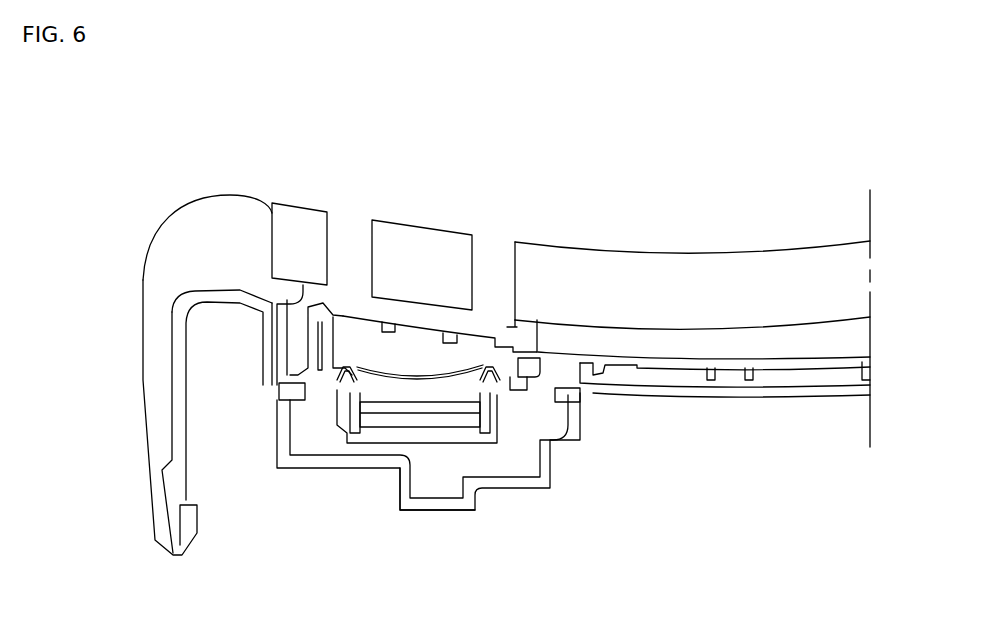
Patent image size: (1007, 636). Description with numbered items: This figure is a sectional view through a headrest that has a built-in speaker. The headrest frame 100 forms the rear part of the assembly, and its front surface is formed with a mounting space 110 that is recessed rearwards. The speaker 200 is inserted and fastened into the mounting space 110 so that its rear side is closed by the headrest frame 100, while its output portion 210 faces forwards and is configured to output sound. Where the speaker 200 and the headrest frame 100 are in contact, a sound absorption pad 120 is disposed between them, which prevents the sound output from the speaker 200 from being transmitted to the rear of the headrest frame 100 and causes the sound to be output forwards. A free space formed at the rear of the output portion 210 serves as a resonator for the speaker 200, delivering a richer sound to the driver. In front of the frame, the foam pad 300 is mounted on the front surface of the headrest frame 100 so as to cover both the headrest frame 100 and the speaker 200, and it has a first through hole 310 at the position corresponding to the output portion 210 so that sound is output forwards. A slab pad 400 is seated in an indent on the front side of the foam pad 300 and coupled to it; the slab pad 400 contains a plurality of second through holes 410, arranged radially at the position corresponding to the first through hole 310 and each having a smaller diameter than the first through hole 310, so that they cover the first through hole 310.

The headrest frame 100 is at (337, 472).
The mounting space 110 is at (519, 454).
The sound absorption pad 120 is at (287, 393).
The speaker 200 is at (274, 350).
The output portion 210 is at (420, 323).
The foam pad 300 is at (180, 240).
The first through hole 310 is at (512, 325).
The slab pad 400 is at (683, 270).
The second through holes 410 is at (350, 245).